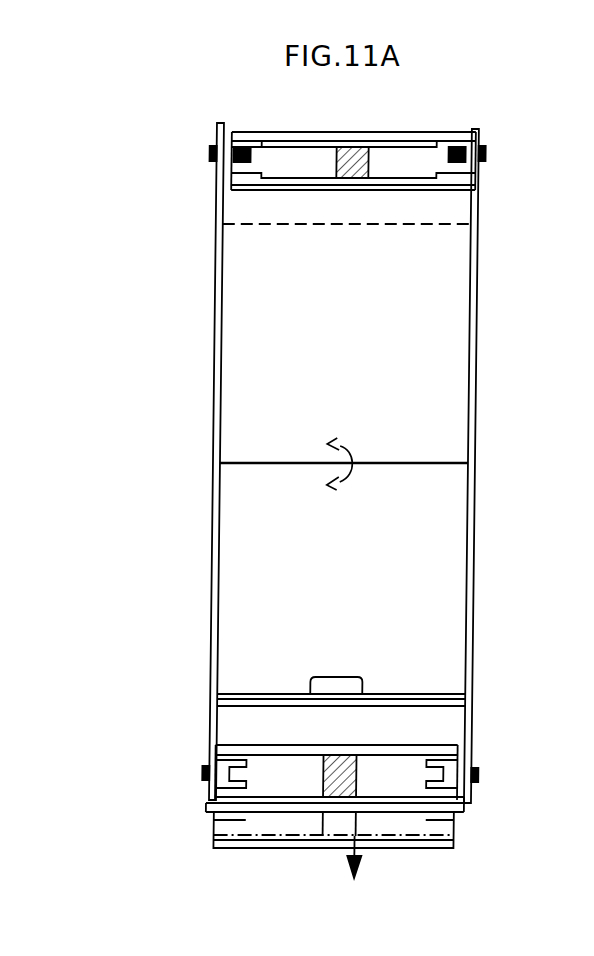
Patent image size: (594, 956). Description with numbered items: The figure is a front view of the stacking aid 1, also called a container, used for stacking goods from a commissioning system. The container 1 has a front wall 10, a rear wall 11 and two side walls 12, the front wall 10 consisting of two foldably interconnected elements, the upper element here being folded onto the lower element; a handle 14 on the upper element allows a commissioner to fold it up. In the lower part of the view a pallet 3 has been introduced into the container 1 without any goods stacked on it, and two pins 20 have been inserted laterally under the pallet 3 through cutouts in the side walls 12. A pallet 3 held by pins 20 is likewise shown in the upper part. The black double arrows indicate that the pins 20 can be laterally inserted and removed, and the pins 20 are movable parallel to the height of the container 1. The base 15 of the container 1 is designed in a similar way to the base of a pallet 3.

The stacking aid 1 is at (593, 582).
The pallet 3 is at (348, 154).
The front wall 10 is at (243, 603).
The rear wall 11 is at (442, 298).
The side walls 12 is at (211, 373).
The handle 14 is at (343, 675).
The base 15 is at (410, 835).
The pins 20 is at (213, 153).